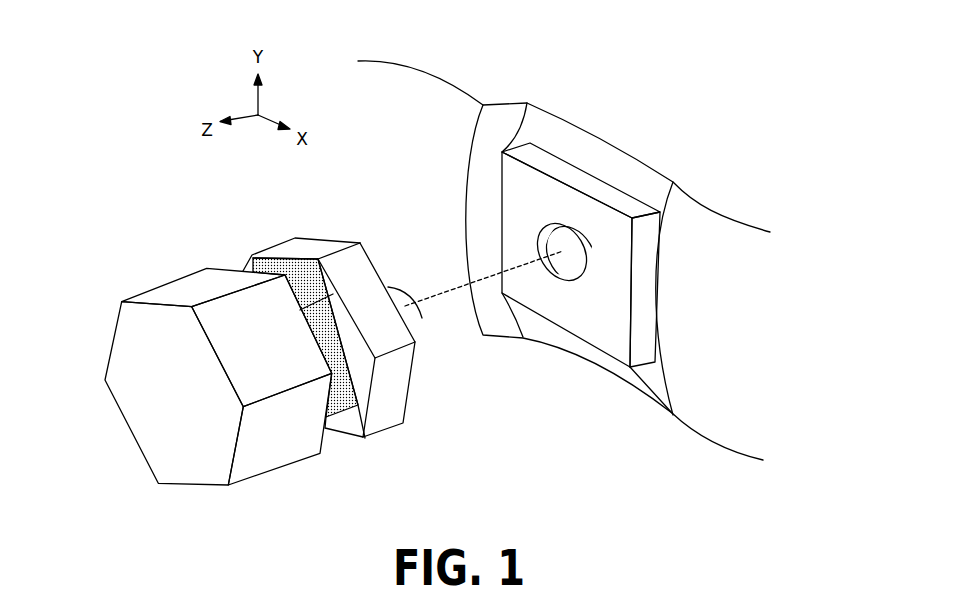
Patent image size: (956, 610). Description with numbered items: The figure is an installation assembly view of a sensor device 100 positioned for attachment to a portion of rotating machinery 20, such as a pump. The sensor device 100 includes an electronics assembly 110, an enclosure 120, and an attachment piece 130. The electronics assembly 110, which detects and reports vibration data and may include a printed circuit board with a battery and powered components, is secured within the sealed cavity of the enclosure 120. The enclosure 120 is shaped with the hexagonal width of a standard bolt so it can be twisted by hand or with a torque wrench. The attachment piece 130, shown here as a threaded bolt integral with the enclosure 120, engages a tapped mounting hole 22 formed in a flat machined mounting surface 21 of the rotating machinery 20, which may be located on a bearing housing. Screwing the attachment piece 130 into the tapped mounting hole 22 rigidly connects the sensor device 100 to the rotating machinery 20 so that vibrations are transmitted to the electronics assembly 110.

The sensor device 100 is at (130, 227).
The electronics assembly 110 is at (298, 262).
The enclosure 120 is at (278, 467).
The attachment piece 130 is at (429, 332).
The rotating machinery 20 is at (768, 195).
The mounting surface 21 is at (549, 167).
The tapped mounting hole 22 is at (566, 222).